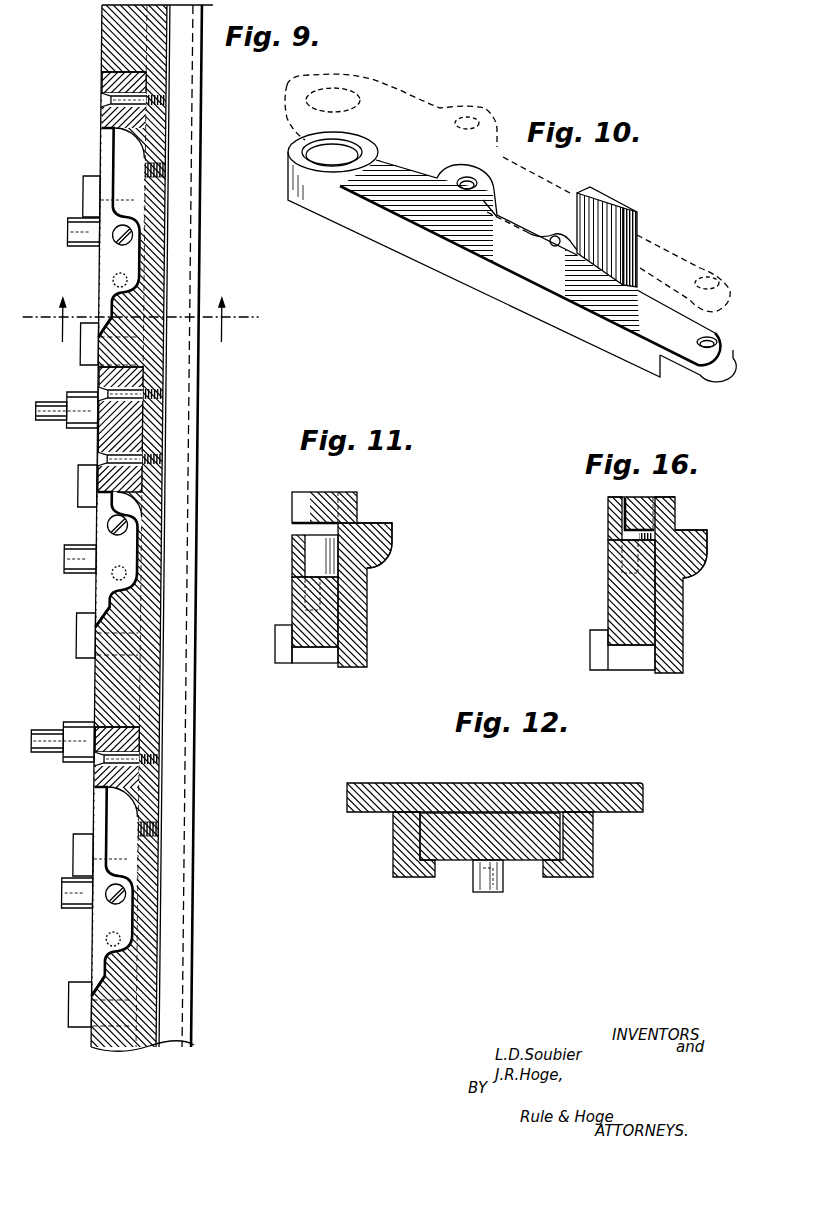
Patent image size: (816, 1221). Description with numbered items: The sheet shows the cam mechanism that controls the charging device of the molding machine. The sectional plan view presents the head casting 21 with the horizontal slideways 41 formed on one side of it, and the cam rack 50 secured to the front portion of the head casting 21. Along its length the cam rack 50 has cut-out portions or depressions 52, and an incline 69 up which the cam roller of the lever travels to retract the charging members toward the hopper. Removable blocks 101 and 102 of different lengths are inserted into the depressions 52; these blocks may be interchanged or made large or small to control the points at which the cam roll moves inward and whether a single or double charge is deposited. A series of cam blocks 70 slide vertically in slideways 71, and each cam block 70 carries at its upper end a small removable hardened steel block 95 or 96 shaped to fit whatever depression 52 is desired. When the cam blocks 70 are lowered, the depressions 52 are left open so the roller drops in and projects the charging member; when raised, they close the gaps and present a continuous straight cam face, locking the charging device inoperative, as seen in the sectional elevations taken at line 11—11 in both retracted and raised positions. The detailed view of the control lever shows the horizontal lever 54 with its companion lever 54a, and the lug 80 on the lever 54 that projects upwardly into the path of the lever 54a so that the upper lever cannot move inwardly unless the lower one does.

In FIG. 9, the section line 11- 11 is at (140, 320).
In FIG. 9, the head casting 21 is at (212, 459).
In FIG. 11, the head casting 21 is at (364, 592).
In FIG. 16, the head casting 21 is at (679, 573).
In FIG. 12, the head casting 21 is at (437, 785).
In FIG. 9, the horizontal slideways 41 is at (186, 432).
In FIG. 11, the horizontal slideways 41 is at (358, 518).
In FIG. 16, the horizontal slideways 41 is at (677, 518).
In FIG. 9, the cam rack 50 is at (112, 23).
In FIG. 11, the cam rack 50 is at (327, 502).
In FIG. 16, the cam rack 50 is at (674, 505).
In FIG. 9, the depressions 52 is at (118, 143).
In FIG. 10, the horizontal lever 54 is at (409, 248).
In FIG. 10, the horizontal lever 54a is at (403, 107).
In FIG. 9, the incline 69 is at (136, 306).
In FIG. 9, the cam blocks 70 is at (128, 201).
In FIG. 11, the cam blocks 70 is at (302, 629).
In FIG. 16, the cam blocks 70 is at (613, 589).
In FIG. 12, the cam blocks 70 is at (466, 854).
In FIG. 9, the slideways 71 is at (138, 199).
In FIG. 11, the slideways 71 is at (300, 657).
In FIG. 16, the slideways 71 is at (622, 654).
In FIG. 12, the slideways 71 is at (420, 844).
In FIG. 10, the lug 80 is at (618, 212).
In FIG. 9, the hardened steel block 95 is at (108, 263).
In FIG. 11, the hardened steel block 95 is at (292, 544).
In FIG. 16, the hardened steel block 95 is at (608, 516).
In FIG. 9, the hardened steel block 96 is at (108, 537).
In FIG. 9, the removable block 101 is at (115, 80).
In FIG. 9, the removable block 102 is at (103, 438).